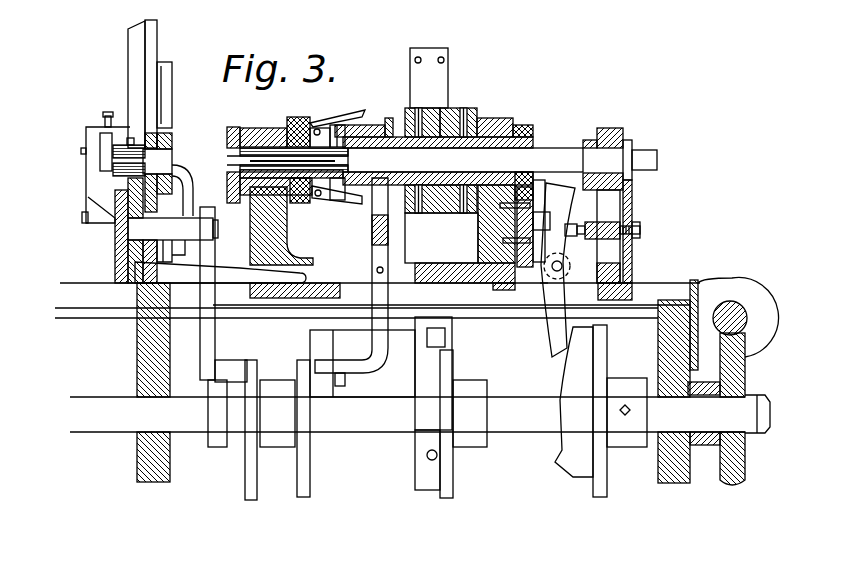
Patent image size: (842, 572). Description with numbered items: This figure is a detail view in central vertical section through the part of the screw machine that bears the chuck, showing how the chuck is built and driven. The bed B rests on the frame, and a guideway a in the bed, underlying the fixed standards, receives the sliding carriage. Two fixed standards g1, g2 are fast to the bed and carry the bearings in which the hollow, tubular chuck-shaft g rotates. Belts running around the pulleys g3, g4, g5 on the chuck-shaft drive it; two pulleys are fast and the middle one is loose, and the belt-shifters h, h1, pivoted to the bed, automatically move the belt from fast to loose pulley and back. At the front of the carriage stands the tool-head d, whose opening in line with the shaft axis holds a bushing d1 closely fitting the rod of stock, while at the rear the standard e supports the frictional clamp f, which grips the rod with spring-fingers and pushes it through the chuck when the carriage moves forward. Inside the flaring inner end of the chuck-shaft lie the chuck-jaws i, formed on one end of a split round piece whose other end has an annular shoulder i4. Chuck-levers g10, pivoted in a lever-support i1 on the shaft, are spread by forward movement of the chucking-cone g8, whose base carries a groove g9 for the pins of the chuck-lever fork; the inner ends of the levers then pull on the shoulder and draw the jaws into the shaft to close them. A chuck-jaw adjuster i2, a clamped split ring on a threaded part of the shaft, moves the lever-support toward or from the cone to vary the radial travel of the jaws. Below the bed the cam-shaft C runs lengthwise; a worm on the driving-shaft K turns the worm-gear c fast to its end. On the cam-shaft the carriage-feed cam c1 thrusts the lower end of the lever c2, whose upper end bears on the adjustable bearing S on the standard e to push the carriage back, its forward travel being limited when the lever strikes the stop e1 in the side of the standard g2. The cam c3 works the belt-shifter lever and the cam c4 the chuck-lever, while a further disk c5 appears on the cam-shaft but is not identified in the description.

The tool-head d is at (134, 116).
The bushing d1 is at (139, 167).
The chuck-jaws i is at (231, 150).
The fixed standard g1 is at (253, 126).
The chuck-jaw adjuster i2 is at (293, 123).
The lever-support i1 is at (308, 140).
The guideway a is at (362, 114).
The chucking-cone g8 is at (380, 124).
The groove g9 is at (390, 118).
The belt-shifter h is at (443, 92).
The pulley g4 is at (453, 112).
The pulley g5 is at (480, 116).
The fixed standard g2 is at (502, 118).
The chuck-shaft g is at (386, 217).
The chuck-levers g10 is at (338, 200).
The annular shoulder i4 is at (350, 157).
The pulley g3 is at (423, 207).
The belt-shifter h1 is at (372, 244).
The lever c2 is at (550, 266).
The stop e1 is at (541, 278).
The standard e is at (611, 128).
The frictional clamp f is at (650, 158).
The bearing S is at (595, 227).
The bed B is at (62, 299).
The cam-shaft C is at (420, 414).
The driving-shaft K is at (750, 318).
The worm-gear c is at (746, 380).
The carriage-feed cam c1 is at (608, 479).
The cam c3 is at (451, 476).
The cam c4 is at (310, 475).
The cam disc c5 is at (258, 483).